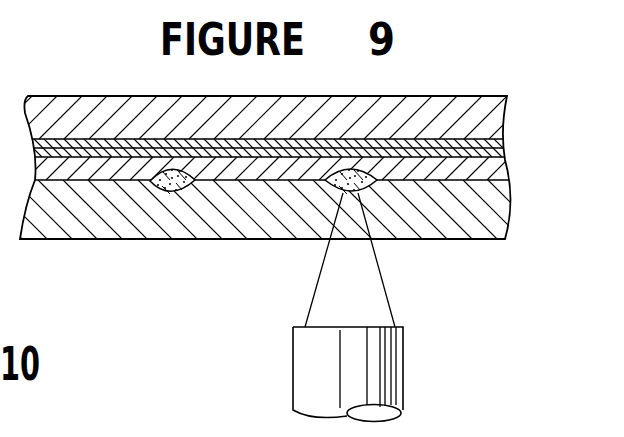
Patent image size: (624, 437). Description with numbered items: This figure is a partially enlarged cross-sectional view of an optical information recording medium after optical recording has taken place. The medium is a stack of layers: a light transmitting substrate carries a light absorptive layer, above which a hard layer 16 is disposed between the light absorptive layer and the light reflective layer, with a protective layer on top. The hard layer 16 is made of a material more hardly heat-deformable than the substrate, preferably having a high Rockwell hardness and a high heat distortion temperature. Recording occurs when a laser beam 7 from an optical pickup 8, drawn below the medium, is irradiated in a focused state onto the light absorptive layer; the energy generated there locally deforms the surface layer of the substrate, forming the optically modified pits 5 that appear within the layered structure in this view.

The optically modified pits 5 is at (370, 188).
The hard layer 16 is at (212, 166).
The laser beam 7 is at (333, 289).
The optical pickup 8 is at (378, 363).